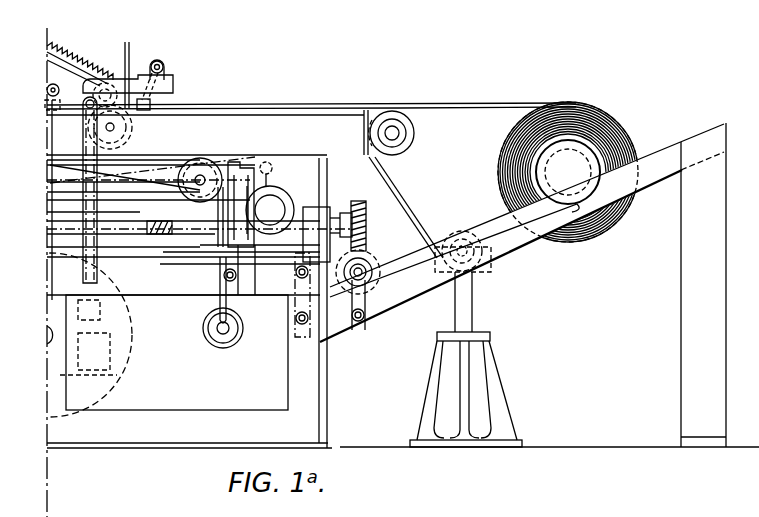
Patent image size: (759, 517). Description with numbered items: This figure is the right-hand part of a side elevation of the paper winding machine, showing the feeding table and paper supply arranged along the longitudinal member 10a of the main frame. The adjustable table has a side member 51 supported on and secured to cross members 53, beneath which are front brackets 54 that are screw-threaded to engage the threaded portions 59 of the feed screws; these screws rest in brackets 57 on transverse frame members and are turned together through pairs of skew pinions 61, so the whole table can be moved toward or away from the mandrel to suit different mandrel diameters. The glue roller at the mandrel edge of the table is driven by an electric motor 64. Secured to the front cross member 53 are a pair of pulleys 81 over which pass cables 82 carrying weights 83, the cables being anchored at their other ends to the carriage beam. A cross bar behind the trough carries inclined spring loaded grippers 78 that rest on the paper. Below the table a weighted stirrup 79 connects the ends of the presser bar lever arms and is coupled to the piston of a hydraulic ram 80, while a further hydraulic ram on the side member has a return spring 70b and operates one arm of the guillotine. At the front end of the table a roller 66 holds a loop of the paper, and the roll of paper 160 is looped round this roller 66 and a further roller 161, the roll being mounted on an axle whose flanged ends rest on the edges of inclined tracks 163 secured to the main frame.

The return spring 70b is at (90, 40).
The inclined spring loaded grippers 78 is at (153, 105).
The pulleys 81 is at (184, 168).
The cross members 53 is at (256, 140).
The side member 51 is at (311, 129).
The roller 66 is at (417, 128).
The roll of paper 160 is at (598, 84).
The inclined tracks 163 is at (657, 187).
The further roller 161 is at (482, 205).
The electric motor 64 is at (301, 193).
The brackets 57 is at (328, 210).
The skew pinions 61 is at (363, 262).
The stirrup 79 is at (80, 212).
The hydraulic ram 80 is at (104, 247).
The threaded portions 59 is at (160, 244).
The cables 82 is at (217, 244).
The front brackets 54 is at (243, 253).
The longitudinal member 10a is at (153, 289).
The weights 83 is at (245, 327).